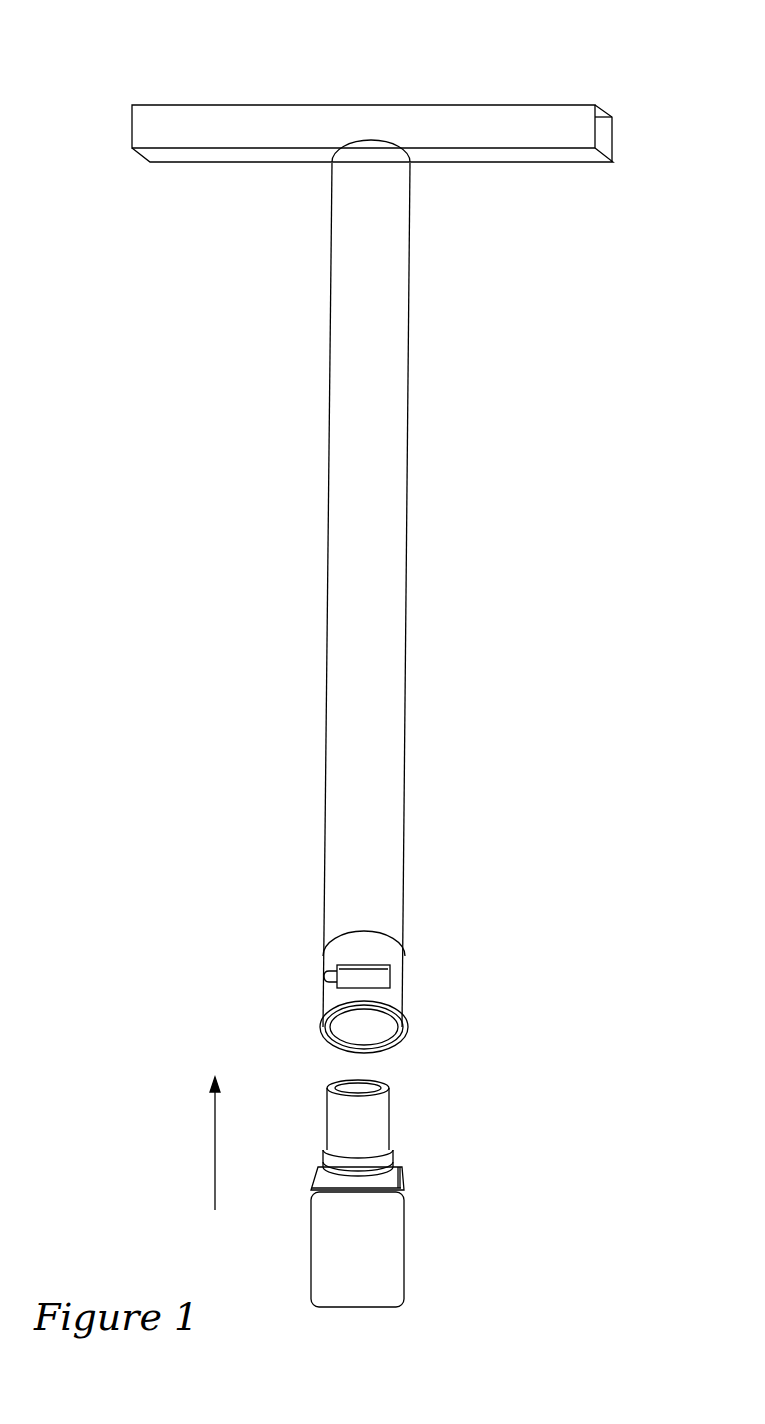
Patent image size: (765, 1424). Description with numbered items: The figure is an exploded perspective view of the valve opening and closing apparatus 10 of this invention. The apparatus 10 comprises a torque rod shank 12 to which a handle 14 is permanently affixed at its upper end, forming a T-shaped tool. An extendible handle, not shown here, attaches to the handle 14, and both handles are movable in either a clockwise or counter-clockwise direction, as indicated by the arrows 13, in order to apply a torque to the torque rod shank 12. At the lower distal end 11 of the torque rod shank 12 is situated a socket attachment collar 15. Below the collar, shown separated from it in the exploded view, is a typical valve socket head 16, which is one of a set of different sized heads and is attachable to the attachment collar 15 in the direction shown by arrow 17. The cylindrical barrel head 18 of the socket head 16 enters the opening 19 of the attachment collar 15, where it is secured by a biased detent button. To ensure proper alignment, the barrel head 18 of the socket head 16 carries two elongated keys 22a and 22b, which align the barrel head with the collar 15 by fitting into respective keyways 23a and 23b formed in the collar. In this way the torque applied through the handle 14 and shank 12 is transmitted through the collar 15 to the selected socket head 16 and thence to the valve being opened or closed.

The valve opening and closing apparatus 10 is at (138, 500).
The lower distal end 11 is at (196, 1007).
The torque rod shank 12 is at (390, 550).
The arrows 13 is at (190, 68).
The handle 14 is at (480, 127).
The socket attachment collar 15 is at (400, 967).
The valve socket head 16 is at (385, 1252).
The arrow 17 is at (215, 1160).
The cylindrical barrel head 18 is at (371, 1125).
The opening 19 is at (372, 1030).
The elongated key 22a is at (393, 1145).
The elongated key 22b is at (328, 1138).
The keyway 23a is at (362, 1007).
The keyway 23b is at (363, 1048).